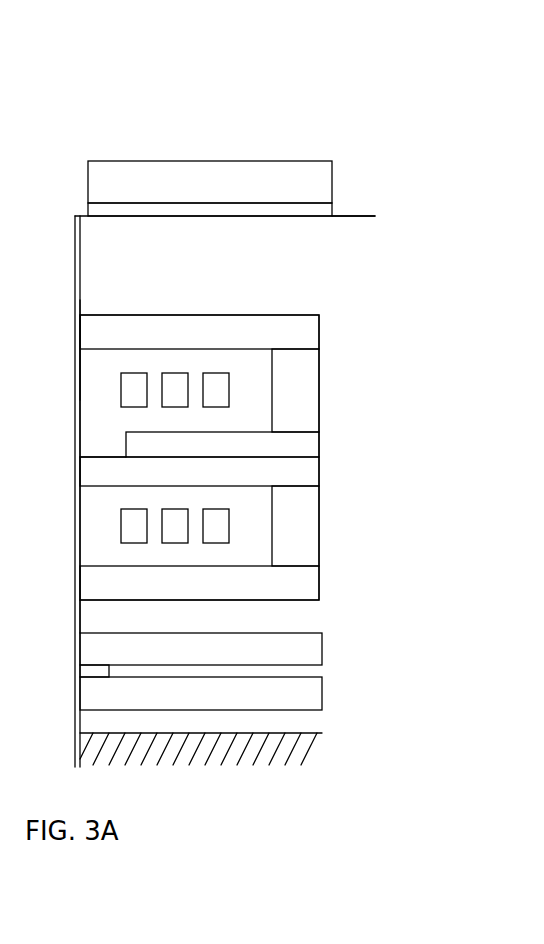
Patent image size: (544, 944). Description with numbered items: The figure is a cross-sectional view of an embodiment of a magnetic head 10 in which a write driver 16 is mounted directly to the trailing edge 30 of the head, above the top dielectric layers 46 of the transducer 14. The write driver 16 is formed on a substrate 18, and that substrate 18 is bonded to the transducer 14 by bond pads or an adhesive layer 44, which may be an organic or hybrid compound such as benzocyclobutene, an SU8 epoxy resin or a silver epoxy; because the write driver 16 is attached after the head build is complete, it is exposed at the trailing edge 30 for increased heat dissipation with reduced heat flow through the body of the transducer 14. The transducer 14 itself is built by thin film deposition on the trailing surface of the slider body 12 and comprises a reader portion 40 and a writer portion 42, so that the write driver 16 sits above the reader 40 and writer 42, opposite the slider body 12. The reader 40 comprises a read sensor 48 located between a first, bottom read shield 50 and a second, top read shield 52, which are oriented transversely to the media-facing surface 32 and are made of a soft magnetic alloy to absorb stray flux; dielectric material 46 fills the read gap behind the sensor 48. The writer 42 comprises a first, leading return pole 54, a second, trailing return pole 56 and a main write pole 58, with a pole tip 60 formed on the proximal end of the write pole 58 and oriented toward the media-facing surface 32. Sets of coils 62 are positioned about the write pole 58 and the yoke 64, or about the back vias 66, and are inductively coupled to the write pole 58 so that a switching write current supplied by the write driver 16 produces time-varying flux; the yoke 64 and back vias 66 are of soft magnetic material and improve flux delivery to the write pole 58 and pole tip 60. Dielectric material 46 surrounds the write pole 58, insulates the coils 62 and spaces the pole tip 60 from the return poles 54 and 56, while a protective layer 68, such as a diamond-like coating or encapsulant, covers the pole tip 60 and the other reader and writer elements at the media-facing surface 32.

The magnetic head 10 is at (414, 123).
The slider body 12 is at (313, 750).
The transducer 14 is at (58, 307).
The write driver 16 is at (232, 197).
The substrate 18 is at (238, 217).
The trailing edge 30 is at (367, 208).
The media-facing surface 32 is at (68, 372).
The reader portion 40 is at (370, 630).
The writer portion 42 is at (364, 313).
The adhesive layer or bond pads 44 is at (282, 216).
The dielectric material 46 is at (169, 280).
The read sensor 48 is at (80, 672).
The first read shield 50 is at (196, 704).
The second read shield 52 is at (169, 661).
The first return pole 54 is at (196, 595).
The second return pole 56 is at (194, 344).
The main write pole 58 is at (308, 473).
The pole tip 60 is at (93, 473).
The coils 62 is at (212, 387).
The yoke 64 is at (311, 443).
The back vias 66 is at (309, 402).
The protective layer 68 is at (77, 614).